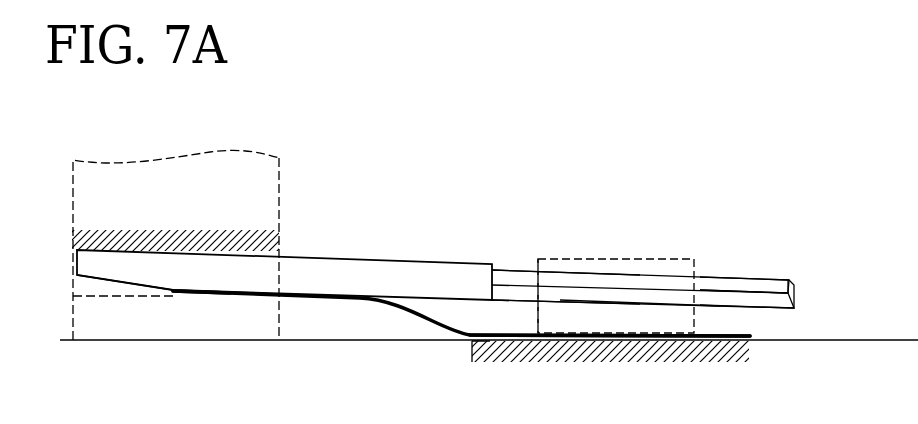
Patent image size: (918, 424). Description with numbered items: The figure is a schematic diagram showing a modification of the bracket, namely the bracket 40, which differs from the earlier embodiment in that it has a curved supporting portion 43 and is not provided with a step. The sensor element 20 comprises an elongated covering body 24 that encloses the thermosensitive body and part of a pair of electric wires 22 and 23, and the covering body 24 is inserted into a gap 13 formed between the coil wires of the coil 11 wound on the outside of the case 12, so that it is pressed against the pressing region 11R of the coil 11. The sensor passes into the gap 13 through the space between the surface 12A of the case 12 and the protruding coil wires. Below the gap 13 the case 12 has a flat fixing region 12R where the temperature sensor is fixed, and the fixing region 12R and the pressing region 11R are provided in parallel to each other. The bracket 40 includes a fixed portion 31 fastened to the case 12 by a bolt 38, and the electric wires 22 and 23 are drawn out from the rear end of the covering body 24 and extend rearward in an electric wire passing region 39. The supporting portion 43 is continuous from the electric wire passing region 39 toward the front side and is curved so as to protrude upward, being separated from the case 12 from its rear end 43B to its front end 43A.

The coil 11 is at (202, 156).
The pressing region 11R is at (244, 230).
The covering body 24 is at (128, 252).
The sensor element 20 is at (310, 253).
The gap 13 is at (113, 283).
The supporting portion 43 is at (388, 308).
The front end 43A is at (175, 294).
The rear end 43B is at (467, 337).
The case 12 is at (613, 234).
The surface 12A is at (418, 338).
The fixing region 12R is at (598, 342).
The electric wire 22 is at (753, 273).
The electric wire 23 is at (778, 290).
The bolt 38 is at (666, 258).
The fixed portion 31 is at (560, 338).
The bracket 40 is at (665, 343).
The electric wire passing region 39 is at (487, 341).